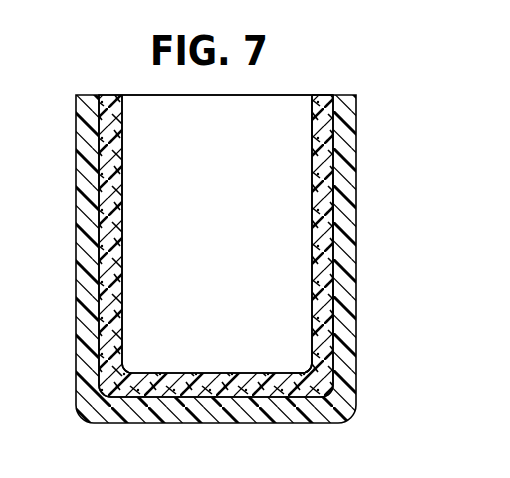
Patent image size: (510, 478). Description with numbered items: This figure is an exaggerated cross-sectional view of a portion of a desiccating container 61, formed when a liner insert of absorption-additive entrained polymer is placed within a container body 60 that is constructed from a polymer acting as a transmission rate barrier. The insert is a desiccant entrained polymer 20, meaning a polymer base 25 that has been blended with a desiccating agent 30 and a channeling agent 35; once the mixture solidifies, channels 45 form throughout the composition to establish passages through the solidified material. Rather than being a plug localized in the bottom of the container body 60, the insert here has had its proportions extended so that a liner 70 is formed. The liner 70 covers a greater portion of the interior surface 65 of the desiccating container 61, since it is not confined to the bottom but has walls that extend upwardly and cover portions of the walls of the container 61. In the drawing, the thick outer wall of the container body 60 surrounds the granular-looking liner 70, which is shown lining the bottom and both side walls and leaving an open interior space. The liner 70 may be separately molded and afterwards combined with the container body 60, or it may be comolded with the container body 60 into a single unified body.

The desiccant entrained polymer 20 is at (289, 215).
The polymer base 25 is at (314, 153).
The desiccating agent 30 is at (316, 118).
The channeling agent 35 is at (336, 212).
The channels 45 is at (329, 96).
The container body 60 is at (355, 290).
The desiccating container 61 is at (255, 241).
The interior surface 65 is at (333, 315).
The liner 70 is at (328, 372).